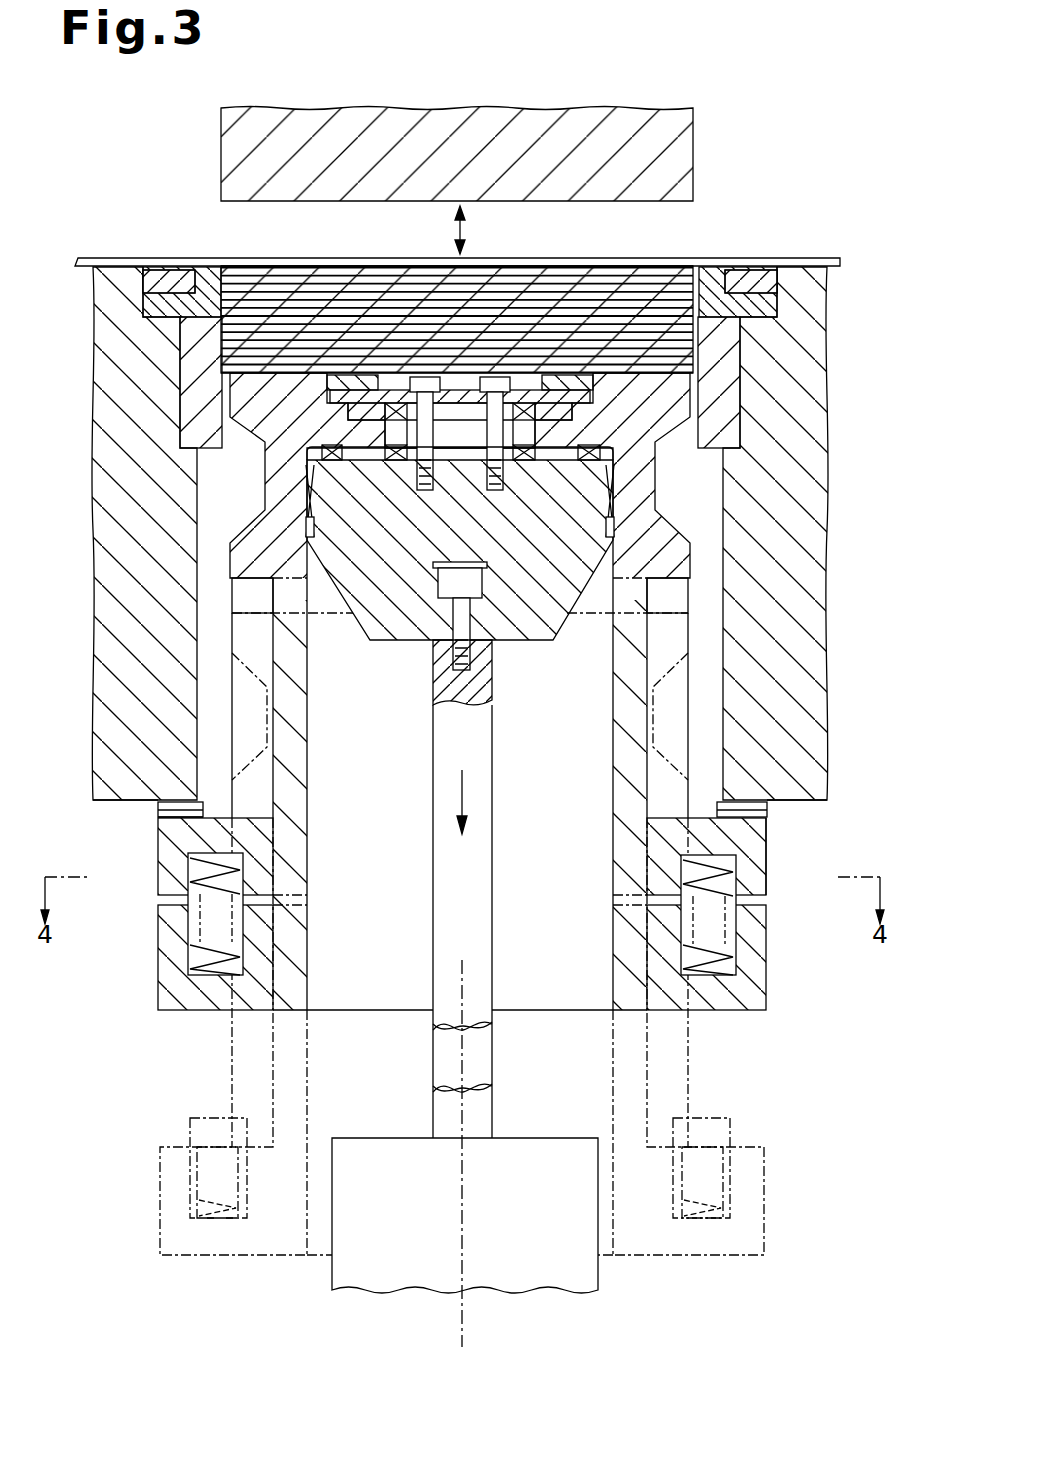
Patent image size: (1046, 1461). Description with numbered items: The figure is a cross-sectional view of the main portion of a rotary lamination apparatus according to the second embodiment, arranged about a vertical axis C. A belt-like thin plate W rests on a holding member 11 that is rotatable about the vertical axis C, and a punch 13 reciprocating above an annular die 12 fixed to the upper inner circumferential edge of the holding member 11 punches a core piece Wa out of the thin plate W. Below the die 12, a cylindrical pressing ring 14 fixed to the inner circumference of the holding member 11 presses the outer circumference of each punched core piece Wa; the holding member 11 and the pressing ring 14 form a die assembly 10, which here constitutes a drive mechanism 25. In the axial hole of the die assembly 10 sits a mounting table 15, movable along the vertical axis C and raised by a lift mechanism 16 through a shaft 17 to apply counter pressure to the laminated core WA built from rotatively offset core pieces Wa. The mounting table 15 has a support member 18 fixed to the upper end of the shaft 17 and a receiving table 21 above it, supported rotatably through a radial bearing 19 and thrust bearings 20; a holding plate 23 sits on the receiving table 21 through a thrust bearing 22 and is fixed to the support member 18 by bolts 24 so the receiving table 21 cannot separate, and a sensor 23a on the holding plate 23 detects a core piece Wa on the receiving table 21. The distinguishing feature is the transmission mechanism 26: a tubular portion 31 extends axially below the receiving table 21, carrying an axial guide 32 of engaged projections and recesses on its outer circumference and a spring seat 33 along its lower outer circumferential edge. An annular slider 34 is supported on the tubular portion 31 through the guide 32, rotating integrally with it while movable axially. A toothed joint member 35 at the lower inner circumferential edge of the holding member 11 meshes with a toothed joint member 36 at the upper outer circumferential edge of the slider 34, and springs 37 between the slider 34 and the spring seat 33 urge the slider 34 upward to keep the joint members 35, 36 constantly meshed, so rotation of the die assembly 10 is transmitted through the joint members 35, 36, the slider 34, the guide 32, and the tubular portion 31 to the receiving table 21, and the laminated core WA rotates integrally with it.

The die assembly 10 is at (818, 410).
The holding member 11 is at (797, 792).
The die 12 is at (707, 278).
The punch 13 is at (680, 148).
The pressing ring 14 is at (725, 355).
The mounting table 15 is at (224, 393).
The lift mechanism 16 is at (377, 1147).
The shaft 17 is at (433, 732).
The support member 18 is at (397, 640).
The radial bearing 19 is at (618, 507).
The thrust bearings 20 is at (570, 466).
The receiving table 21 is at (247, 425).
The thrust bearing 22 is at (633, 399).
The holding plate 23 is at (320, 398).
The sensor 23a is at (597, 384).
The bolts 24 is at (437, 466).
The drive mechanism 25 is at (96, 803).
The transmission mechanism 26 is at (772, 881).
The tubular portion 31 is at (278, 650).
The guide 32 is at (240, 712).
The spring seat 33 is at (167, 983).
The slider 34 is at (167, 877).
The joint member 35 is at (158, 813).
The joint member 36 is at (158, 820).
The springs 37 is at (210, 953).
The thin plate W is at (127, 258).
The core piece Wa is at (299, 292).
The laminated core WA is at (354, 272).
The vertical axis C is at (465, 1320).